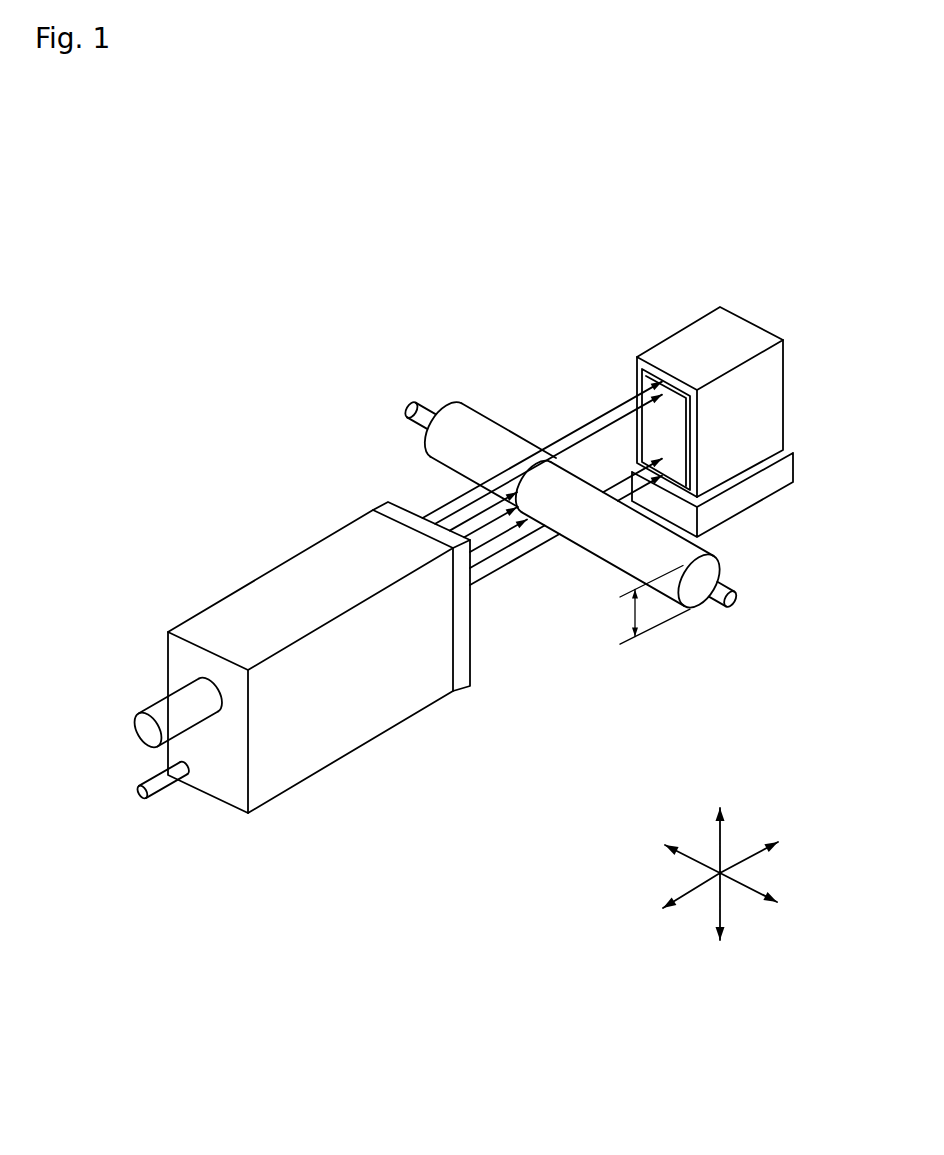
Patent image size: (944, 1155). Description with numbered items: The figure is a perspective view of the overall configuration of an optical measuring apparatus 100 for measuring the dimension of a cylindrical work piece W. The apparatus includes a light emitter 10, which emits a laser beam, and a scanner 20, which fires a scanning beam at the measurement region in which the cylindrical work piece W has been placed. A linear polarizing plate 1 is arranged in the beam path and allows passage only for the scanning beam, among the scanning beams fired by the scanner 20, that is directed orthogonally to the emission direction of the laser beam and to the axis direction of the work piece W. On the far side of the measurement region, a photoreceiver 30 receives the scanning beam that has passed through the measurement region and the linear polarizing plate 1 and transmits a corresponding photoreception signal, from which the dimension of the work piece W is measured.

The linear polarizing plate 1 is at (388, 508).
The light emitter 10 is at (273, 555).
The scanner 20 is at (313, 535).
The photoreceiver 30 is at (662, 330).
The work piece W is at (468, 423).
The optical measuring apparatus 100 is at (568, 762).